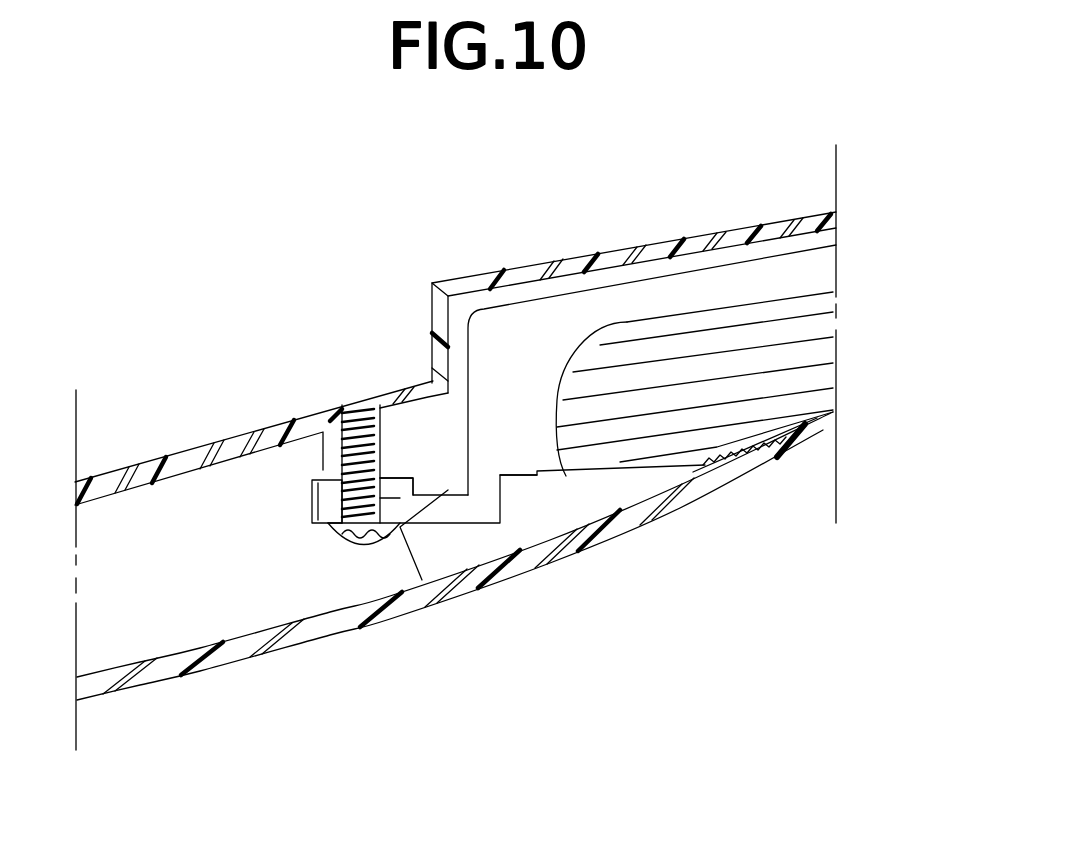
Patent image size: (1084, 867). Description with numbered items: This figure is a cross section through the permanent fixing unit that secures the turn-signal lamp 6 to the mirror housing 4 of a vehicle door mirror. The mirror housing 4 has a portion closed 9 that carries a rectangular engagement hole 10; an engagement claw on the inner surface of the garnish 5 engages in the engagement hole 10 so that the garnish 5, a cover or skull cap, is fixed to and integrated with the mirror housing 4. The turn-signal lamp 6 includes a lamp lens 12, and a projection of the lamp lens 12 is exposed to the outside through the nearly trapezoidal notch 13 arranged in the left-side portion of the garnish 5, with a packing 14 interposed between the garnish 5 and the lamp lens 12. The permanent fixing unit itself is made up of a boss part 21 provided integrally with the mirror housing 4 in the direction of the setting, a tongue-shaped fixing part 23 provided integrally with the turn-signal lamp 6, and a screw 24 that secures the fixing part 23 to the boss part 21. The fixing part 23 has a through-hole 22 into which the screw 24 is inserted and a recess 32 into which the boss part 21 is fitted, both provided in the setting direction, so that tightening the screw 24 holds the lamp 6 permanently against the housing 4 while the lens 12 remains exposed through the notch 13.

The mirror housing 4 is at (695, 226).
The garnish 5 is at (180, 710).
The turn-signal lamp 6 is at (544, 513).
The portion closed 9 is at (797, 238).
The engagement hole 10 is at (158, 462).
The lamp lens 12 is at (560, 317).
The notch 13 is at (813, 421).
The packing 14 is at (741, 448).
The boss part 21 is at (412, 420).
The through-hole 22 is at (340, 542).
The fixing part 23 is at (445, 470).
The screw 24 is at (362, 547).
The recess 32 is at (333, 500).